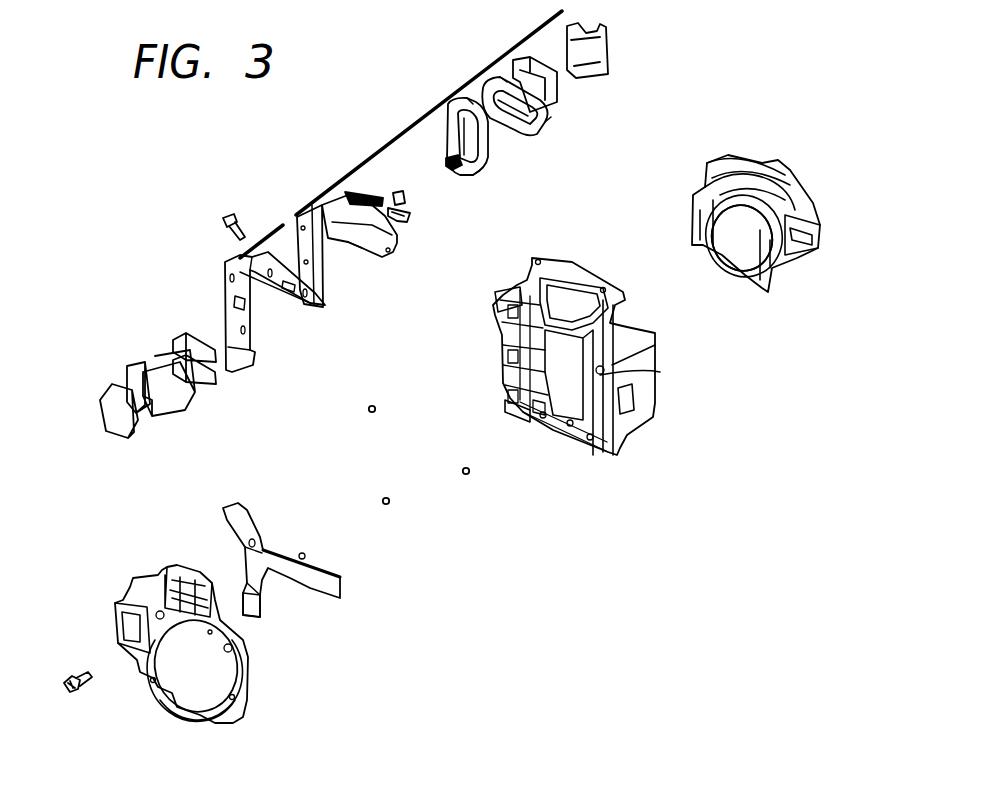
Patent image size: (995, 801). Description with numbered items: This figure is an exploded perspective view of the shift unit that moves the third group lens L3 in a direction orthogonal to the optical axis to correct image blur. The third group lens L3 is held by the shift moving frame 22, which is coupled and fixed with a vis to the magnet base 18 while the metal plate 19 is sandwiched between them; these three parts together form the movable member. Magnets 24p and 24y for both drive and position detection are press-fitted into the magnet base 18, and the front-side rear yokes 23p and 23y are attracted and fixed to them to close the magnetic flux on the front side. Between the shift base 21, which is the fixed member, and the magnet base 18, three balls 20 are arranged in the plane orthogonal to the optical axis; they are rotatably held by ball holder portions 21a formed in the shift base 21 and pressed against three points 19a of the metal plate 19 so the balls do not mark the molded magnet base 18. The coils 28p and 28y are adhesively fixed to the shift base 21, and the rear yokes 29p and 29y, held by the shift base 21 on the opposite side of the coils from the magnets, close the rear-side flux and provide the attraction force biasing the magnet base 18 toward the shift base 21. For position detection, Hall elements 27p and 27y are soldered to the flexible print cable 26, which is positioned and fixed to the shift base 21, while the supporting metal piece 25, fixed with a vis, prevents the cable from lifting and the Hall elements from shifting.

The magnet base 18 is at (142, 575).
The metal plate 19 is at (236, 507).
The points of the metal plate 19a is at (302, 553).
The balls 20 is at (372, 413).
The shift base 21 is at (590, 272).
The ball holder portion 21a is at (497, 300).
The shift moving frame 22 is at (720, 157).
The third group lens L3 is at (740, 245).
The rear yoke (front yoke) for yaw direction 23y is at (113, 425).
The rear yoke (front yoke) for pitch direction 23p is at (162, 362).
The magnets for yaw direction 24y is at (128, 373).
The magnets for pitch direction 24p is at (195, 340).
The supporting metal piece 25 is at (240, 265).
The flexible print cable (FPC) 26 is at (310, 205).
The Hall element for yaw direction 27y is at (400, 192).
The Hall element for pitch direction 27p is at (452, 172).
The coil for yaw direction 28y is at (490, 167).
The coil for pitch direction 28p is at (545, 125).
The rear yoke (magnetic member) for yaw direction 29y is at (560, 100).
The rear yoke (magnetic member) for pitch direction 29p is at (608, 58).